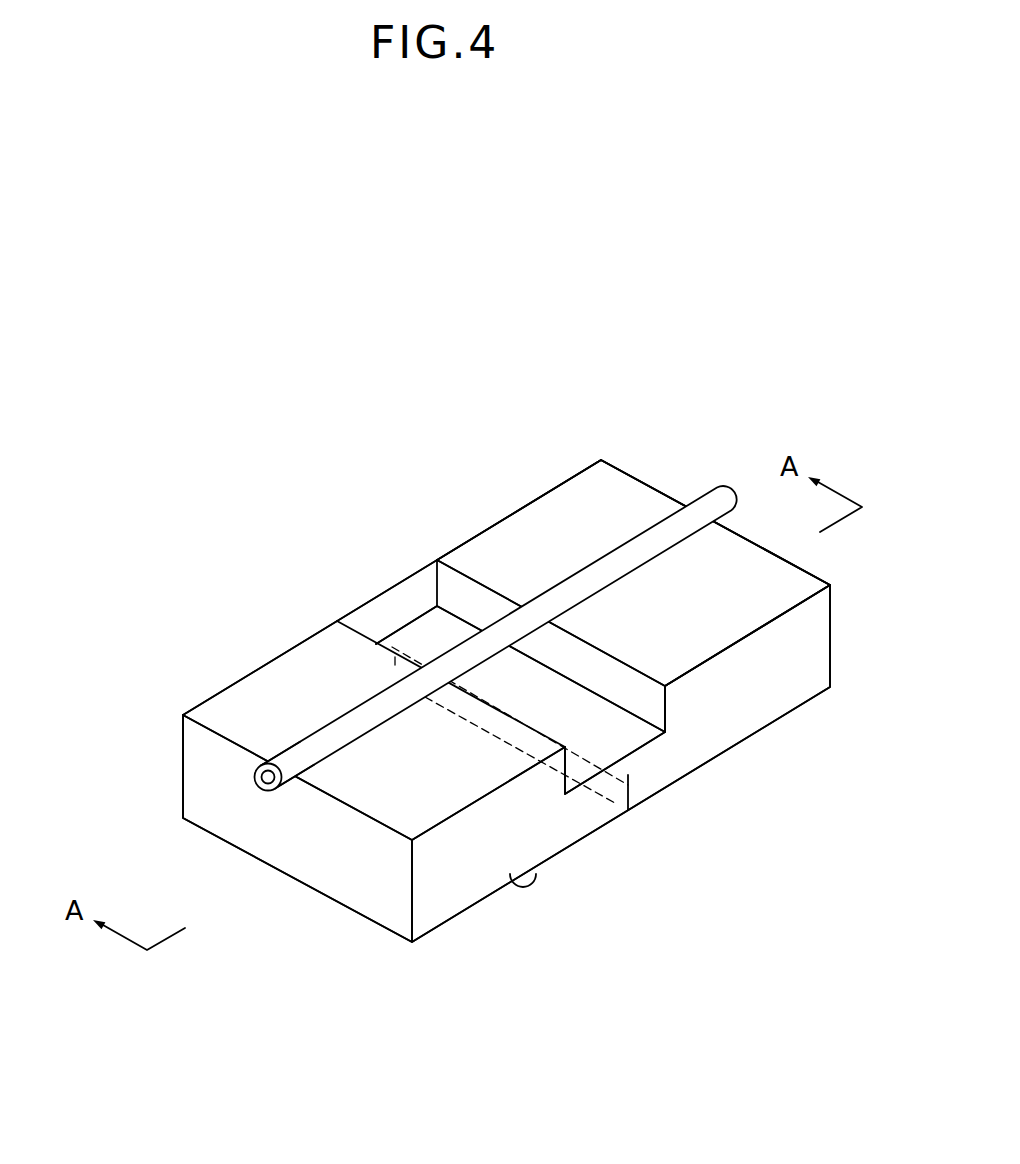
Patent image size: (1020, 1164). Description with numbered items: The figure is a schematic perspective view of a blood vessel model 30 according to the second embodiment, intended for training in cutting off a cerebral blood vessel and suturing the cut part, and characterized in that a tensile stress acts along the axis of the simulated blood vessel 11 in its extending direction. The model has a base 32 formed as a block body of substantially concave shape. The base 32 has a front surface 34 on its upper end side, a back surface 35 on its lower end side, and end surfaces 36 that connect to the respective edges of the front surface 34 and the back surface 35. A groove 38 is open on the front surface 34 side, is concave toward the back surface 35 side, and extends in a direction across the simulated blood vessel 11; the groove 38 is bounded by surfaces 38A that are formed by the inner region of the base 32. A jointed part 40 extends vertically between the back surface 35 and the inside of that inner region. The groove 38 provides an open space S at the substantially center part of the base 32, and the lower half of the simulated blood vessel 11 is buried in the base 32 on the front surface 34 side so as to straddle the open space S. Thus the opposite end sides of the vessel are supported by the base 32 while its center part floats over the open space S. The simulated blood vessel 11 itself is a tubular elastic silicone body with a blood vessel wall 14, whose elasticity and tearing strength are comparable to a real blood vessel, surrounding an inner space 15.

The simulated blood vessel 11 is at (331, 730).
The blood vessel wall 14 is at (299, 780).
The inner space 15 is at (258, 792).
The blood vessel model 30 is at (417, 420).
The base 32 is at (537, 522).
The front surface 34 is at (732, 622).
The back surface 35 is at (522, 875).
The end surfaces 36 is at (340, 890).
The groove 38 is at (623, 680).
The surfaces of the groove 38A is at (424, 628).
The jointed part 40 is at (614, 790).
The open space S is at (520, 690).